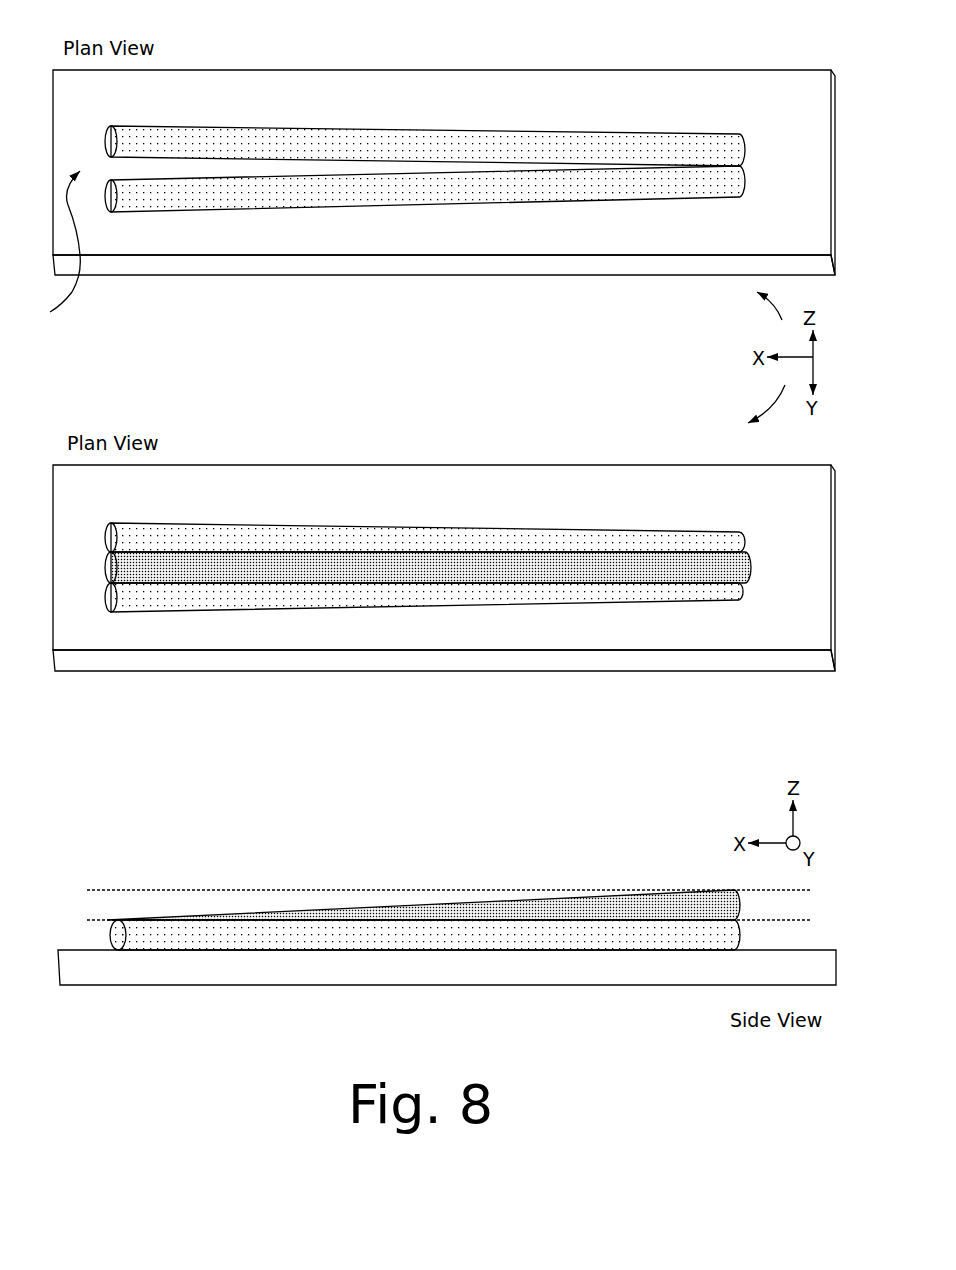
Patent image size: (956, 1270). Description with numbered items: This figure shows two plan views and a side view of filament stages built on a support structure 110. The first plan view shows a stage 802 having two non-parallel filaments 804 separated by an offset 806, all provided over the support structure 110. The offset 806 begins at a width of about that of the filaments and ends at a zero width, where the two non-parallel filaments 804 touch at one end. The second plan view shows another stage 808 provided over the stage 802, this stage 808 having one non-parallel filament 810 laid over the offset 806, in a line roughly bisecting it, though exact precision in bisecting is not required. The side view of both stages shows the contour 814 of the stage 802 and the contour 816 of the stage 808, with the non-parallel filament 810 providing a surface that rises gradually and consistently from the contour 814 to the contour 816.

The support structure 110 is at (292, 268).
The stage 802 is at (610, 103).
The non-parallel filaments 804 is at (345, 192).
The offset 806 is at (64, 255).
The stage 808 is at (538, 565).
The non-parallel filament 810 is at (460, 562).
The contour 814 is at (107, 920).
The contour 816 is at (203, 890).